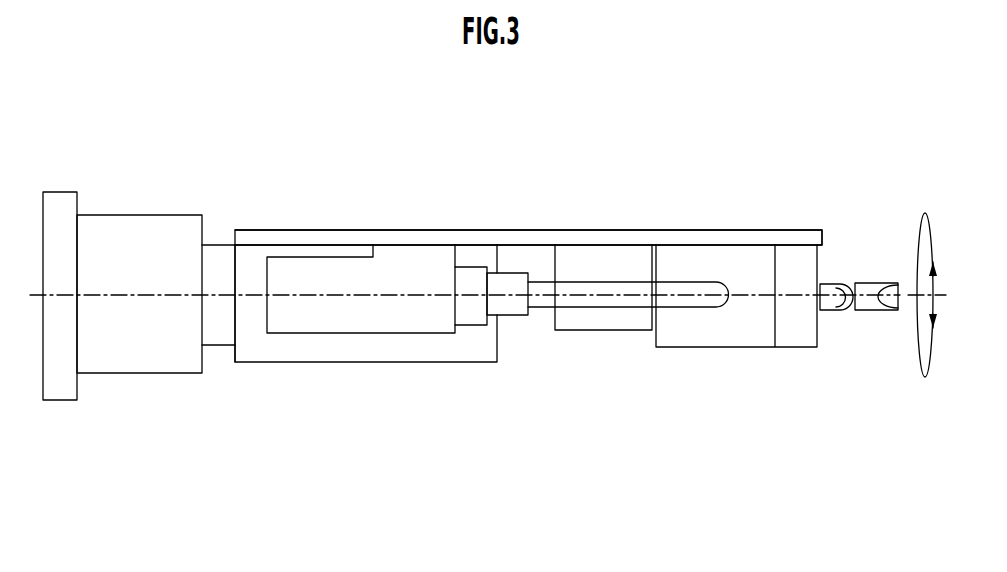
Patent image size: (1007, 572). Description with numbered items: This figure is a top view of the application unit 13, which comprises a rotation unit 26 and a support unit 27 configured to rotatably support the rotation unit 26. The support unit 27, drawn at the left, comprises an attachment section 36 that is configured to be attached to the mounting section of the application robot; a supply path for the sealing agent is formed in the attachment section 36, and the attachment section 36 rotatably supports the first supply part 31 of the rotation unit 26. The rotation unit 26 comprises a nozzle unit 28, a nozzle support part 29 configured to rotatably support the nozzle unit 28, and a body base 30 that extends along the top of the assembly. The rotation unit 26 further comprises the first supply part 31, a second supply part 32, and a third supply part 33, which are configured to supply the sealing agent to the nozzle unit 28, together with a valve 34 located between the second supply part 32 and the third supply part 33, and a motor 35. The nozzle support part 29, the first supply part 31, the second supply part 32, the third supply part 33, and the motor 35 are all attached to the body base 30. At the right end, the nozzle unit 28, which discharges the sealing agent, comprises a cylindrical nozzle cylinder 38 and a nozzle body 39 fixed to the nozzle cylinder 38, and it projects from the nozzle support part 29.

The application unit 13 is at (655, 173).
The rotation unit 26 is at (473, 205).
The support unit 27 is at (150, 190).
The nozzle unit 28 is at (858, 355).
The nozzle support part 29 is at (718, 348).
The body base 30 is at (798, 240).
The first supply part 31 is at (348, 350).
The second supply part 32 is at (408, 336).
The third supply part 33 is at (622, 310).
The valve 34 is at (512, 322).
The motor 35 is at (580, 332).
The attachment section 36 is at (138, 360).
The nozzle cylinder 38 is at (828, 312).
The nozzle body 39 is at (872, 312).